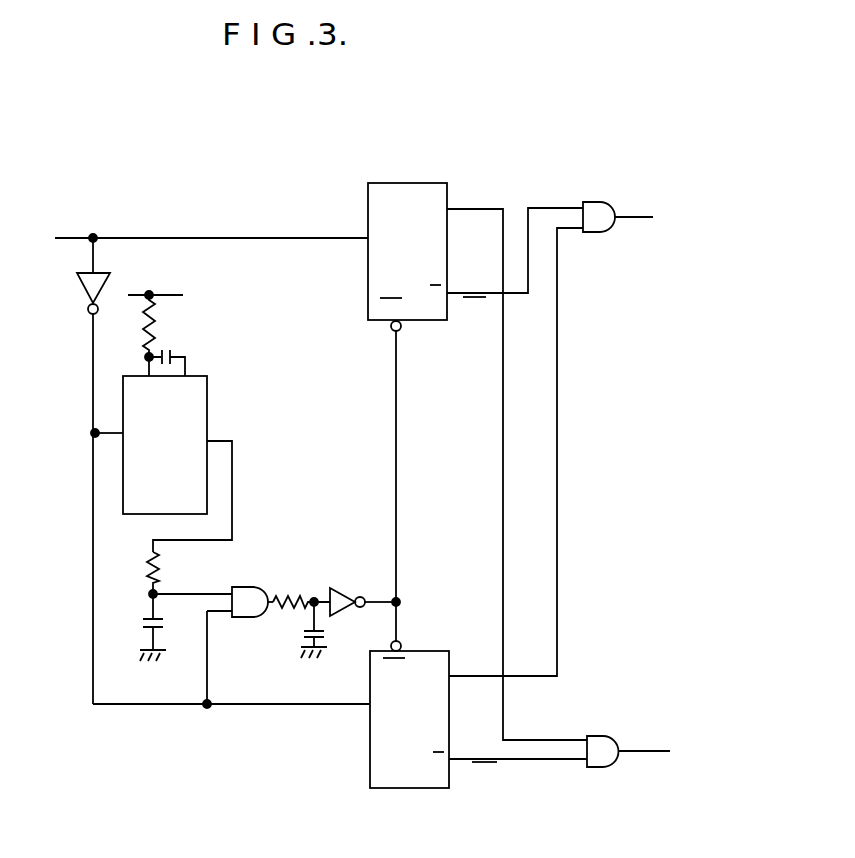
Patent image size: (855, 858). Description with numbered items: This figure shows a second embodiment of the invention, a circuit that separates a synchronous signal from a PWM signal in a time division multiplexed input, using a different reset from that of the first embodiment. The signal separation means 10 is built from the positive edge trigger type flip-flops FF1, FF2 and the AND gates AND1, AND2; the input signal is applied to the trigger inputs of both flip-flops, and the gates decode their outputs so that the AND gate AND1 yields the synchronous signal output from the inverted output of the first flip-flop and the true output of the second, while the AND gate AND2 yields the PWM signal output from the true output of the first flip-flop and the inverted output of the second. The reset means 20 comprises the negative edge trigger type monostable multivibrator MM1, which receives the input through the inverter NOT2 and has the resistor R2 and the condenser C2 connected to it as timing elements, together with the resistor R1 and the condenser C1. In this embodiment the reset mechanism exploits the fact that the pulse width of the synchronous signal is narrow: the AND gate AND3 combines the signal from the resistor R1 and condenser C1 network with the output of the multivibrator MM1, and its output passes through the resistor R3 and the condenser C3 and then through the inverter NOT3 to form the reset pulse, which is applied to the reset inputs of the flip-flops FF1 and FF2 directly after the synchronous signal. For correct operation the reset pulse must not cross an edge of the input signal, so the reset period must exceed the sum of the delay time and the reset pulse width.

The signal separation means 10 is at (506, 162).
The reset means 20 is at (210, 367).
The positive edge trigger type flip-flop FF1 is at (407, 242).
The positive edge trigger type flip-flop FF2 is at (409, 725).
The negative edge trigger type monostable multivibrator MM1 is at (207, 395).
The inverter NOT2 is at (62, 471).
The inverter NOT3 is at (354, 588).
The AND gate AND1 is at (551, 423).
The AND gate AND2 is at (559, 735).
The AND gate AND3 is at (240, 645).
The resistor R1 is at (166, 573).
The resistor R2 is at (156, 324).
The resistor R3 is at (300, 589).
The condenser C1 is at (166, 627).
The condenser C2 is at (171, 353).
The condenser C3 is at (326, 630).